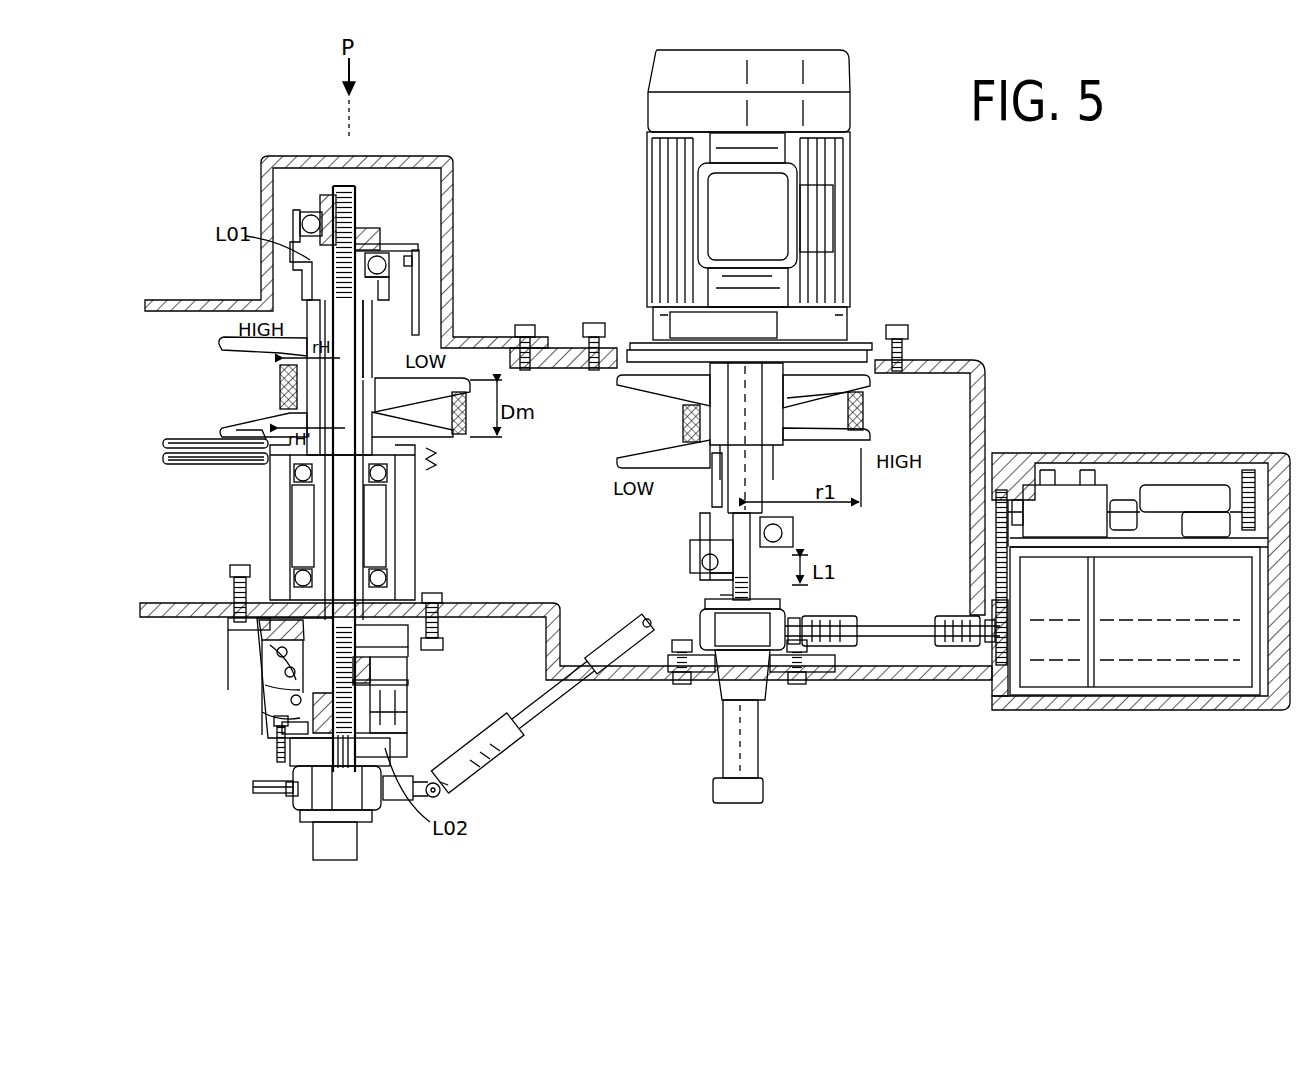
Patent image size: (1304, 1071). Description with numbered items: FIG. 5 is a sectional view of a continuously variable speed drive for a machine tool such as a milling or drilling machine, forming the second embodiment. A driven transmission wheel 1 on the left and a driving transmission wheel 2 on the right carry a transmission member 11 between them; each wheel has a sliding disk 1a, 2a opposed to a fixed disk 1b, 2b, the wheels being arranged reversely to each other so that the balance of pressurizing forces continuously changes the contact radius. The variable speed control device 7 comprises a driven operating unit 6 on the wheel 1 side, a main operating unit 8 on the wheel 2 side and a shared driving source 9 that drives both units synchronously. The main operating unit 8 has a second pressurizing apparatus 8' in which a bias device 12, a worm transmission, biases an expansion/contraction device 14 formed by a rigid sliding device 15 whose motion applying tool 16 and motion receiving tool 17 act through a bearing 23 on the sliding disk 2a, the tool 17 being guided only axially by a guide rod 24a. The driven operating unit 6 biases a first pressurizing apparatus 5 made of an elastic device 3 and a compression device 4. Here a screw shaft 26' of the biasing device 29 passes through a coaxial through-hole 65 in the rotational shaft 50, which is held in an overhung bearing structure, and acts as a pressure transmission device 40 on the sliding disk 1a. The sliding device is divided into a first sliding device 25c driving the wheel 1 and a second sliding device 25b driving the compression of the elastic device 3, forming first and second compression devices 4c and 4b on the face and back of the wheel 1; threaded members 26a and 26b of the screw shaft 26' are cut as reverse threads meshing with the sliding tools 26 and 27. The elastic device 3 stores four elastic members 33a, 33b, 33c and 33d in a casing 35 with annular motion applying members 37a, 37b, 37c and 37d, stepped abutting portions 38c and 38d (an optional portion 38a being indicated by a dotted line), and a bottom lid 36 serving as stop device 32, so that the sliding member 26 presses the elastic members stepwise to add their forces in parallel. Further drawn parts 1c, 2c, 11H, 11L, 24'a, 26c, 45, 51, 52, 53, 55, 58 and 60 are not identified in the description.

The driven transmission wheel 1 is at (205, 380).
The sliding disk 1a is at (218, 338).
The fixed disk 1b is at (258, 425).
The pulley disc hub 1c is at (312, 268).
The driving transmission wheel 2 is at (660, 403).
The sliding disk 2a is at (826, 440).
The fixed disk 2b is at (862, 400).
The bearing 2c is at (692, 563).
The elastic device 3 is at (215, 755).
The compression device 4 is at (232, 835).
The second compression device 4b is at (478, 672).
The first compression device 4c is at (293, 197).
The first pressurizing apparatus 5 is at (380, 820).
The driven operating unit 6 is at (160, 655).
The variable speed control device 7 is at (570, 742).
The main operating unit 8 is at (751, 690).
The second pressurizing apparatus 8' is at (784, 613).
The driving source 9 is at (1150, 700).
The transmission member 11 is at (850, 170).
The belt at high position 11H is at (915, 422).
The belt at low position 11L is at (460, 434).
The bias device 12 is at (730, 690).
The expansion/contraction device 14 is at (730, 630).
The sliding device 15 is at (700, 586).
The motion applying tool 16 is at (752, 582).
The motion receiving tool 17 is at (725, 560).
The bearing 23 is at (785, 535).
The guide rod 24a is at (422, 300).
The flange bracket 24'a is at (419, 681).
The second sliding device 25b is at (380, 740).
The first sliding device 25c is at (330, 196).
The sliding tool 26 is at (407, 652).
The screw shaft 26' is at (285, 460).
The threaded member 26a is at (440, 645).
The threaded member 26b is at (356, 196).
The shaft end 26c is at (345, 835).
The sliding tool 27 is at (364, 232).
The biasing device 29 is at (335, 797).
The stop device 32 is at (388, 714).
The first-stage elastic member 33a is at (300, 728).
The elastic member 33b is at (302, 700).
The elastic member 33c is at (290, 672).
The elastic member 33d is at (272, 648).
The casing 35 is at (282, 728).
The bottom lid 36 is at (432, 597).
The motion applying member 37a is at (300, 577).
The motion applying member 37b is at (235, 592).
The motion applying member 37c is at (240, 588).
The motion applying member 37d is at (238, 626).
The abutting portion 38a is at (262, 790).
The abutting portion with difference in level 38c is at (288, 720).
The abutting portion with difference in level 38d is at (278, 690).
The pressure transmission device 40 is at (436, 452).
The bearing 45 is at (300, 212).
The rotational shaft 50 is at (360, 505).
The bearing 51 is at (385, 578).
The bearing 52 is at (392, 477).
The control box 53 is at (1130, 660).
The worm gear 55 is at (1010, 600).
The connecting shaft 58 is at (905, 636).
The link rod 60 is at (545, 688).
The coaxial through-hole 65 is at (330, 520).